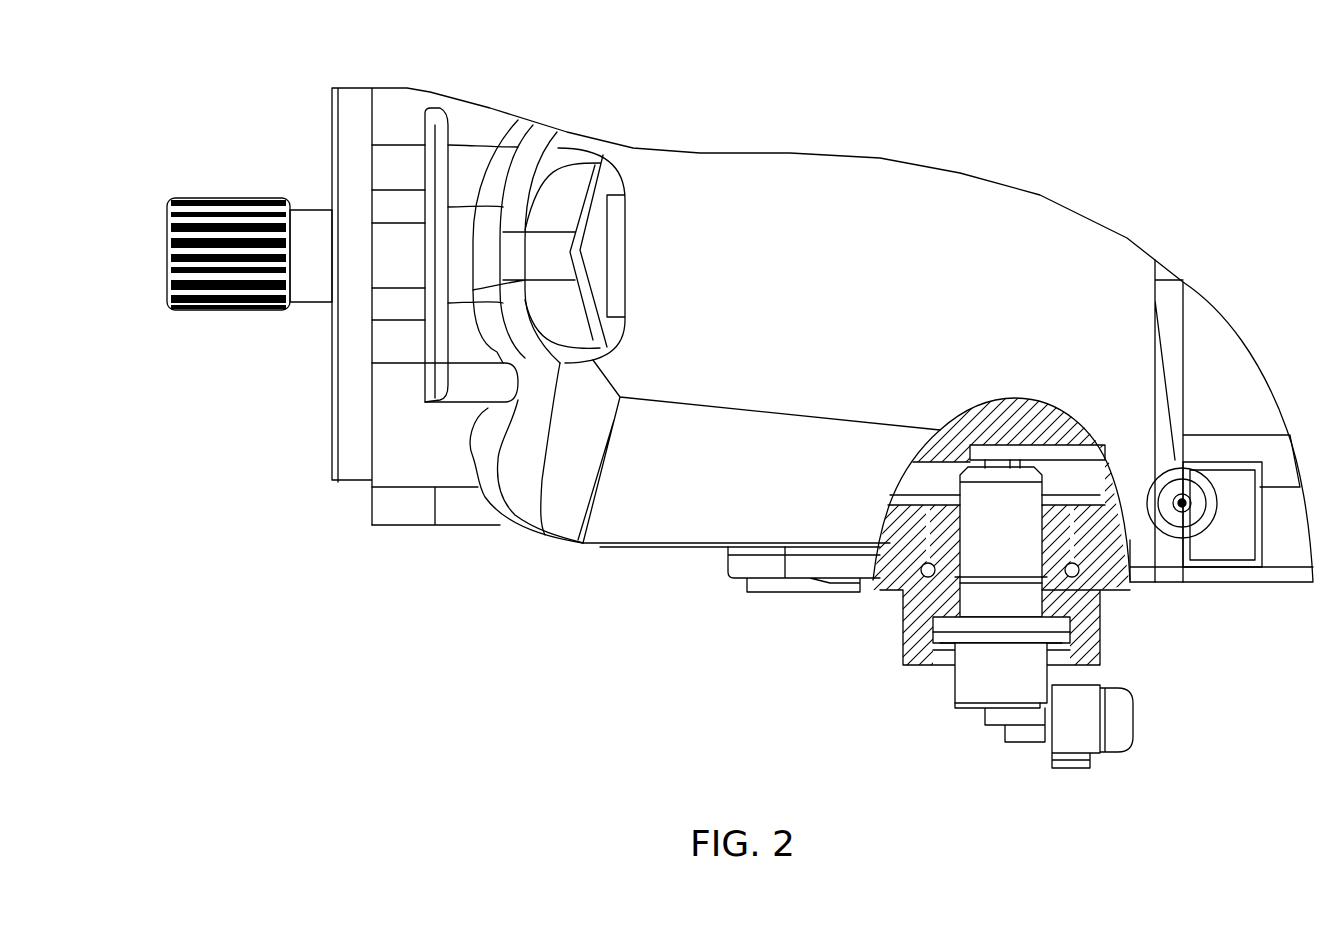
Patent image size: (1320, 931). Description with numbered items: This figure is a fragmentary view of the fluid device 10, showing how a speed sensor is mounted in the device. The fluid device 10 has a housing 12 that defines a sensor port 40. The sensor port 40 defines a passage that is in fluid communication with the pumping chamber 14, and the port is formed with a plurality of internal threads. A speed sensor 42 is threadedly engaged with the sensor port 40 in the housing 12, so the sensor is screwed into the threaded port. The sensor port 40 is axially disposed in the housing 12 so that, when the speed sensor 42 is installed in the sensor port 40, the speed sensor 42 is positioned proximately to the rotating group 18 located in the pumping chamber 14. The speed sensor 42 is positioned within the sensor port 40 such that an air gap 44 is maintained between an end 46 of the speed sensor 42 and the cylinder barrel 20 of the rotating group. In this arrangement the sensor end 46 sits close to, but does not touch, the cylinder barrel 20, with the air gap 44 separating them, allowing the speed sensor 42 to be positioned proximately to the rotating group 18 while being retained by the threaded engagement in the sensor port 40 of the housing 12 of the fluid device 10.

The fluid device 10 is at (383, 50).
The housing 12 is at (607, 532).
The pumping chamber 14 is at (1072, 490).
The rotating group 18 is at (925, 465).
The cylinder barrel 20 is at (1078, 435).
The sensor port 40 is at (925, 585).
The speed sensor 42 is at (948, 688).
The air gap 44 is at (1025, 460).
The end 46 is at (990, 458).